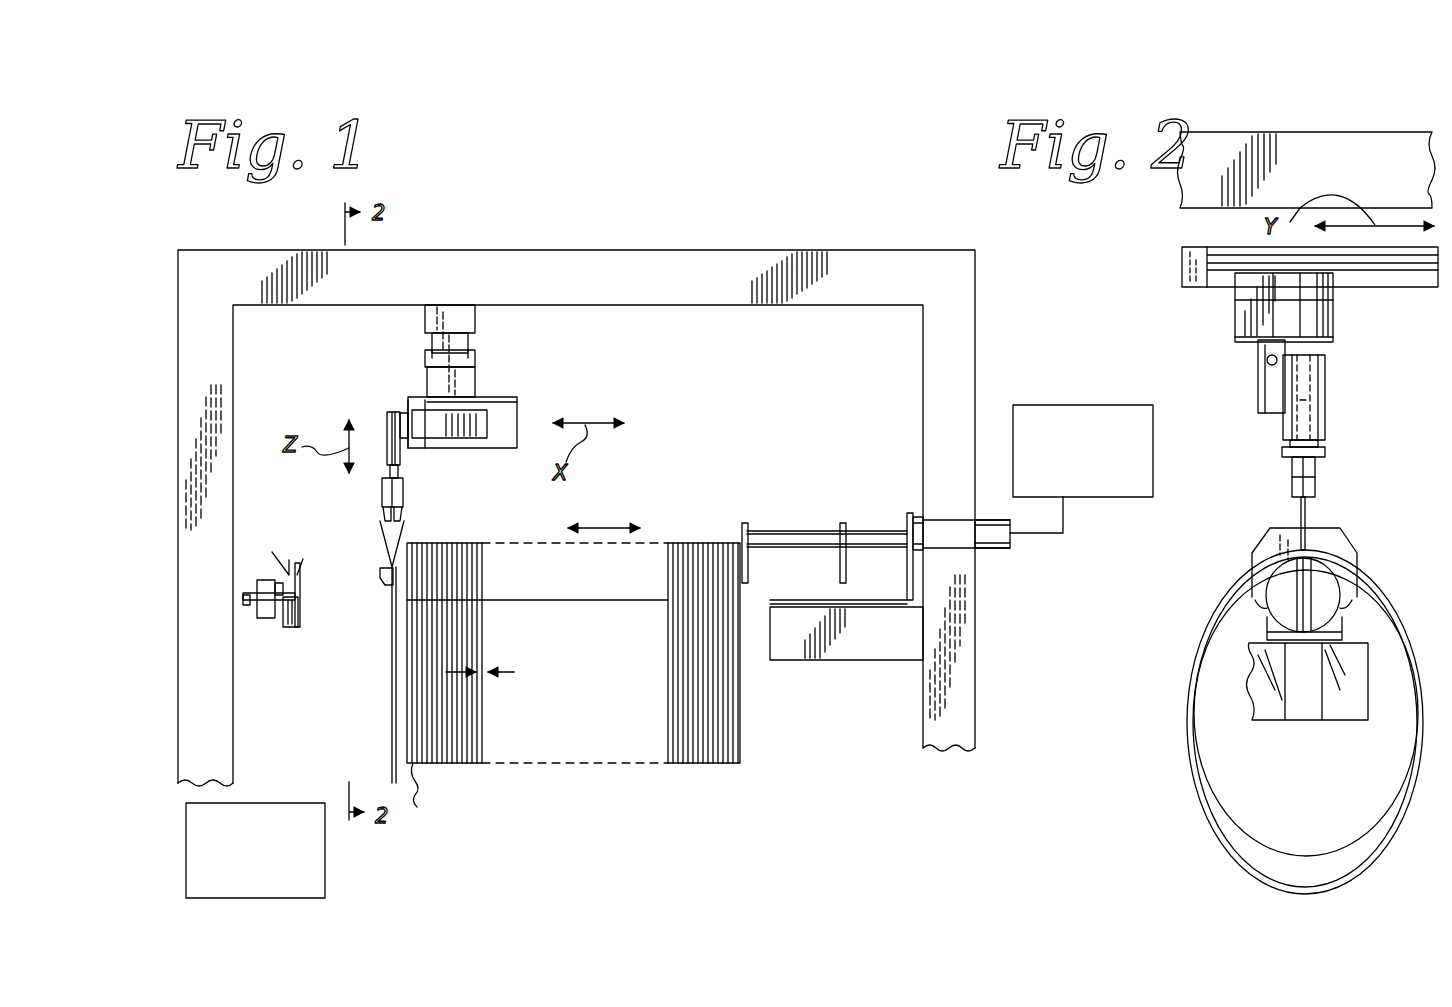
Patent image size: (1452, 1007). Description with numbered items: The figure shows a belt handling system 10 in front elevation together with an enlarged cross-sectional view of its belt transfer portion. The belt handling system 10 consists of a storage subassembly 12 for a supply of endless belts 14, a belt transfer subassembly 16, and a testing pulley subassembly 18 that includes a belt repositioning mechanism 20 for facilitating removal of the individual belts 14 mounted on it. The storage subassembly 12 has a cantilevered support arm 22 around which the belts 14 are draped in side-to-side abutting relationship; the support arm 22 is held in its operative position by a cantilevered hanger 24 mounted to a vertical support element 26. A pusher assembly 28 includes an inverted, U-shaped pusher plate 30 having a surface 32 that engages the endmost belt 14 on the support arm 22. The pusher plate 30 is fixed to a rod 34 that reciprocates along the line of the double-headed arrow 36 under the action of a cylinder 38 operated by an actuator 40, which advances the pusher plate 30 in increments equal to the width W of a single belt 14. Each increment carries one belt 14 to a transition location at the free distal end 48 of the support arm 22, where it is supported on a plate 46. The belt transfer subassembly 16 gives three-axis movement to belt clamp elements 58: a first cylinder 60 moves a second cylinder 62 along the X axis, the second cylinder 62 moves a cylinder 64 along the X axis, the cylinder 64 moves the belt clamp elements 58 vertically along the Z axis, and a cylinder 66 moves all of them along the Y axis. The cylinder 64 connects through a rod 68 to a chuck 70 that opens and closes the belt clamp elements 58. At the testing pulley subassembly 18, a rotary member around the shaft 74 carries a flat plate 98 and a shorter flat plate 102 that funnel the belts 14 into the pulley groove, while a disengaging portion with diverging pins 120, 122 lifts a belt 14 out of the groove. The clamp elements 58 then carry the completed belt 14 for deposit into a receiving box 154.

In FIG. 1, the belt handling system 10 is at (845, 383).
In FIG. 1, the storage subassembly 12 is at (694, 520).
In FIG. 1, the endless belts 14 is at (392, 716).
In FIG. 2, the endless belts 14 is at (1400, 613).
In FIG. 1, the belt transfer subassembly 16 is at (440, 436).
In FIG. 2, the belt transfer subassembly 16 is at (1280, 447).
In FIG. 1, the testing pulley subassembly 18 is at (277, 597).
In FIG. 1, the belt repositioning mechanism 20 is at (303, 625).
In FIG. 1, the cantilevered support arm 22 is at (570, 603).
In FIG. 1, the cantilevered hanger 24 is at (879, 648).
In FIG. 1, the vertical support element 26 is at (933, 731).
In FIG. 1, the pusher assembly 28 is at (825, 518).
In FIG. 1, the pusher plate 30 is at (750, 510).
In FIG. 2, the pusher plate 30 is at (1323, 535).
In FIG. 1, the surface 32 is at (745, 523).
In FIG. 2, the surface 32 is at (1353, 540).
In FIG. 1, the rod 34 is at (866, 535).
In FIG. 1, the double-headed arrow 36 is at (605, 529).
In FIG. 1, the cylinder 38 is at (955, 528).
In FIG. 1, the actuator 40 is at (1073, 483).
In FIG. 1, the plate 46 is at (381, 575).
In FIG. 1, the free distal end 48 is at (407, 545).
In FIG. 1, the belt clamp elements 58 is at (382, 545).
In FIG. 2, the belt clamp elements 58 is at (1301, 513).
In FIG. 1, the first cylinder 60 is at (500, 439).
In FIG. 2, the first cylinder 60 is at (1260, 381).
In FIG. 1, the second cylinder 62 is at (480, 432).
In FIG. 2, the second cylinder 62 is at (1305, 378).
In FIG. 1, the cylinder 64 is at (387, 420).
In FIG. 2, the cylinder 64 is at (1310, 425).
In FIG. 1, the cylinder 66 is at (475, 327).
In FIG. 2, the cylinder 66 is at (1420, 282).
In FIG. 1, the rod 68 is at (398, 470).
In FIG. 1, the chuck 70 is at (403, 494).
In FIG. 2, the chuck 70 is at (1313, 462).
In FIG. 1, the shaft 74 is at (243, 597).
In FIG. 1, the flat plate 98 is at (270, 548).
In FIG. 1, the flat plate 102 is at (300, 553).
In FIG. 1, the pin 120 is at (287, 637).
In FIG. 1, the pin 122 is at (295, 637).
In FIG. 1, the receiving box 154 is at (243, 891).
In FIG. 1, the width W is at (505, 668).